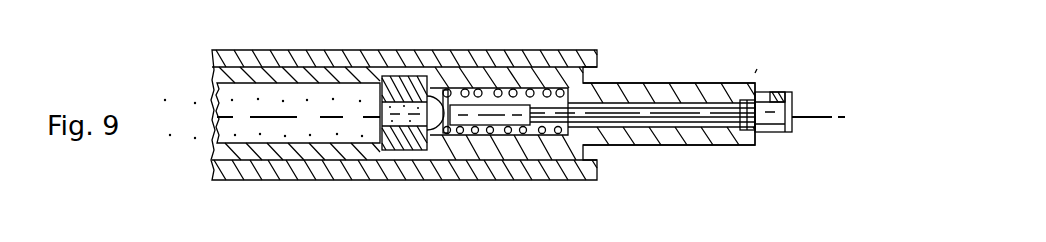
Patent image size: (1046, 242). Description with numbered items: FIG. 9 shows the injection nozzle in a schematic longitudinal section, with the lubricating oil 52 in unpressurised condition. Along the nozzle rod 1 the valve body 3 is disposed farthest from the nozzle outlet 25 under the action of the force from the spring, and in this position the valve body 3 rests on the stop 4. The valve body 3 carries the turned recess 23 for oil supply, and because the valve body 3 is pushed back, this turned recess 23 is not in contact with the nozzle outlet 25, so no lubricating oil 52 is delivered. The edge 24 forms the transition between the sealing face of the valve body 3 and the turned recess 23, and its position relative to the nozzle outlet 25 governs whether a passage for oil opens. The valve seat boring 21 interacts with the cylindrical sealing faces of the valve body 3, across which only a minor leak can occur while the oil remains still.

The lubricating oil 52 is at (267, 95).
The stop for valve body 4 is at (415, 136).
The valve body 3 is at (527, 127).
The nozzle rod 1 is at (648, 135).
The turned recess for oil supply 23 is at (740, 133).
The edge/transition between sealing face and turned recess 24 is at (753, 132).
The nozzle outlet 25 is at (775, 92).
The valve seat boring 21 is at (788, 132).